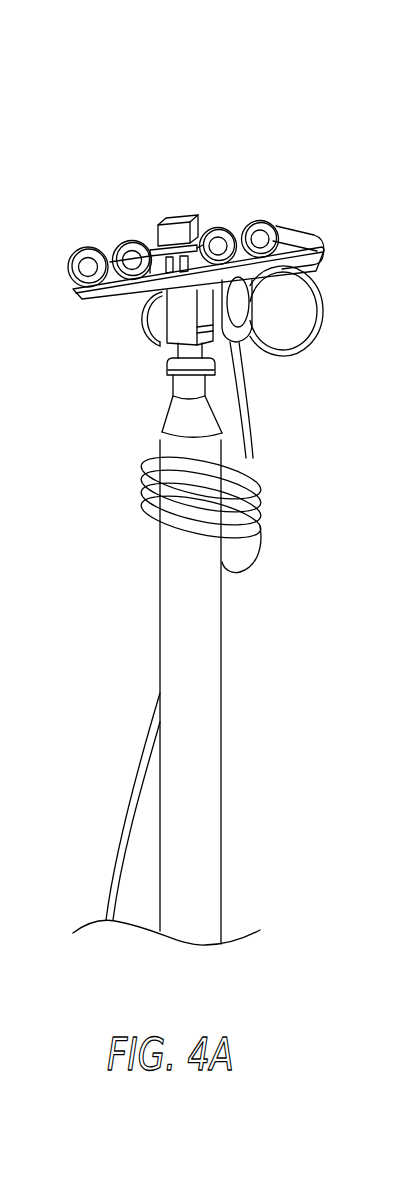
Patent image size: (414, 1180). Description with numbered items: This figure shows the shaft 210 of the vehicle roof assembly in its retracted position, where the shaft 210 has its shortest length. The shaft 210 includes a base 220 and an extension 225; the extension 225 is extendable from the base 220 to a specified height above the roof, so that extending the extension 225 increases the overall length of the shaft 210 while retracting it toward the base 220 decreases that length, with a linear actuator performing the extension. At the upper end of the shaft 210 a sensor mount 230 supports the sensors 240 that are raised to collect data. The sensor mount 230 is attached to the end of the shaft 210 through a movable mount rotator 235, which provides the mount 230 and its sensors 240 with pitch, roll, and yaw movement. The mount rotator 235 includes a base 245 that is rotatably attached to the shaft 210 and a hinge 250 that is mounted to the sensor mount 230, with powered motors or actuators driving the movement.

The shaft 210 is at (130, 134).
The base 220 is at (210, 733).
The extension 225 is at (196, 384).
The sensor mount 230 is at (282, 279).
The mount rotator 235 is at (180, 317).
The sensors 240 is at (128, 241).
The base 245 is at (217, 337).
The hinge 250 is at (233, 302).